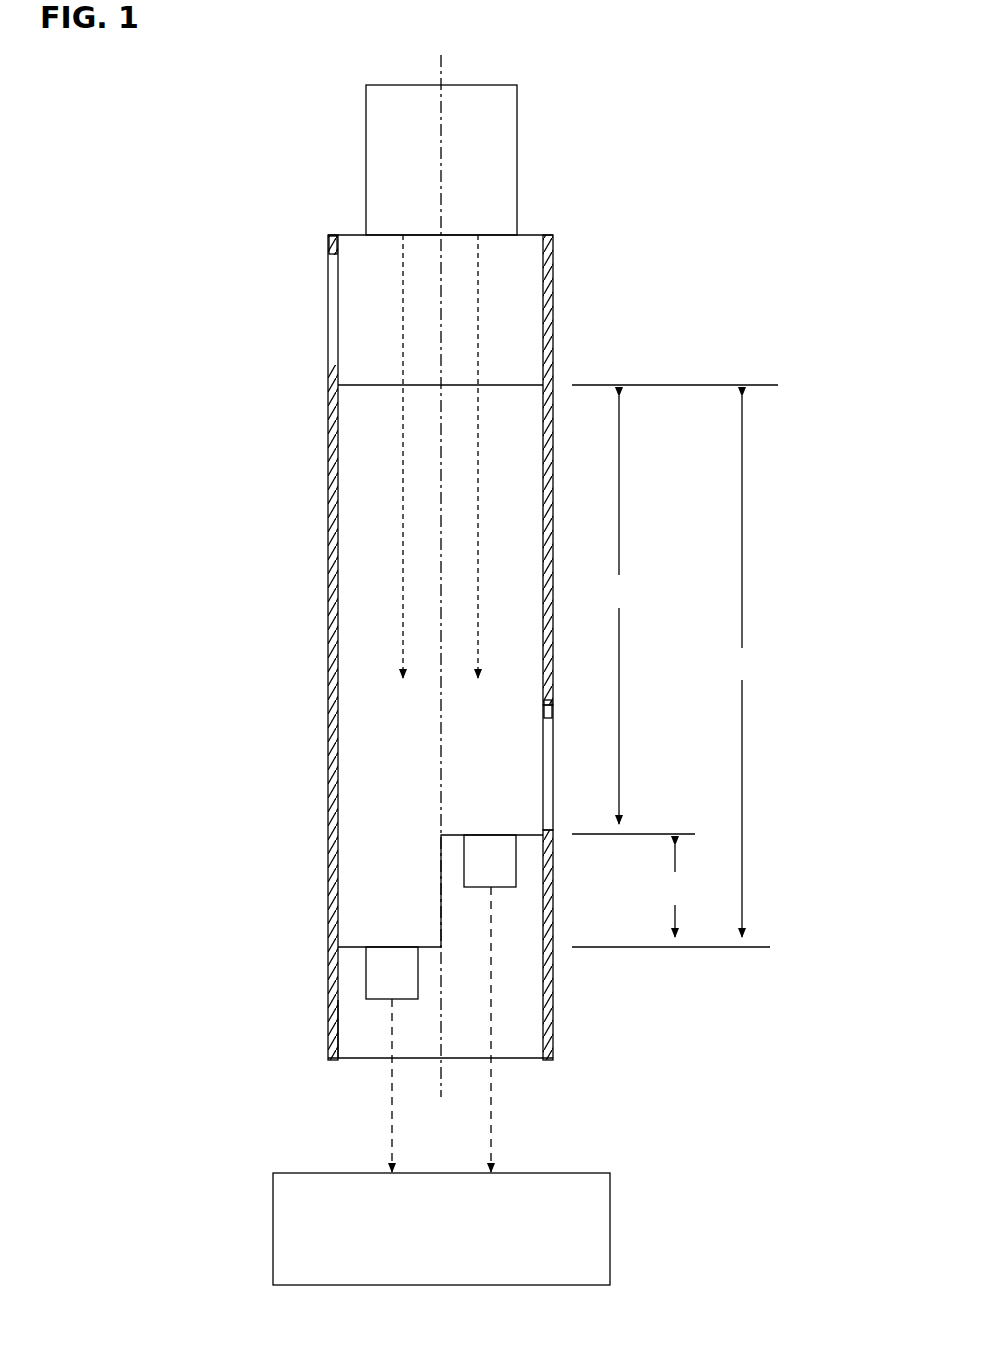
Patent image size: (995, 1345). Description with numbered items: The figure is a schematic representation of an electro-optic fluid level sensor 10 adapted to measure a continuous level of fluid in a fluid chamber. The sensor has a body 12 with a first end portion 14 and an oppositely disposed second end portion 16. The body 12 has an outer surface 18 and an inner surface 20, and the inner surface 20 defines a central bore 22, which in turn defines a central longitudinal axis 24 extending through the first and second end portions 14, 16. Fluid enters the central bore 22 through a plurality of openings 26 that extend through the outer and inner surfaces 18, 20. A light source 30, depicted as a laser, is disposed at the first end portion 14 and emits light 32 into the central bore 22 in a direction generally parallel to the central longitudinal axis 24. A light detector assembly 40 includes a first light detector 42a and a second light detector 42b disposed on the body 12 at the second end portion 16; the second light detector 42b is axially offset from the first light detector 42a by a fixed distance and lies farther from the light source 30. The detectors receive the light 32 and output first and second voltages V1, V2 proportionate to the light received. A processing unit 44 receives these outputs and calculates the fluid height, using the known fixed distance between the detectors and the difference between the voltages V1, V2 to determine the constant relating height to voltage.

The electro-optic fluid level sensor 10 is at (812, 158).
The body 12 is at (250, 408).
The first end portion 14 is at (556, 261).
The second end portion 16 is at (555, 1013).
The outer surface 18 is at (330, 573).
The inner surface 20 is at (541, 306).
The central bore 22 is at (365, 742).
The central longitudinal axis 24 is at (445, 65).
The opening 26 is at (328, 270).
The light source 30 is at (518, 148).
The light 32 is at (402, 460).
The light detector assembly 40 is at (336, 1026).
The first light detector 42a is at (516, 858).
The second light detector 42b is at (366, 975).
The processing unit 44 is at (612, 1228).
The first voltage V1 is at (492, 1115).
The second voltage V2 is at (390, 1098).